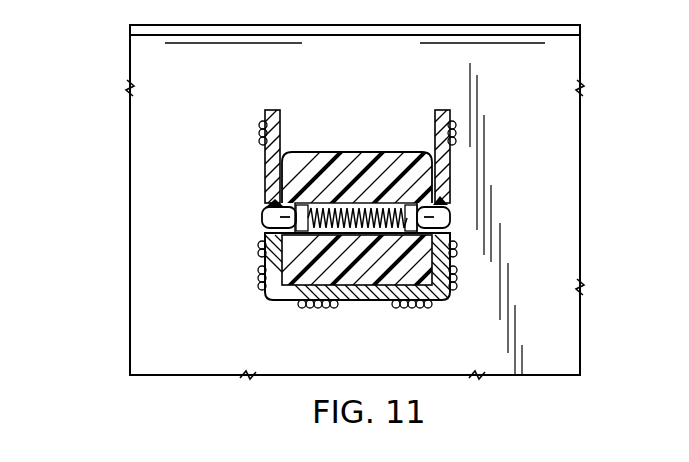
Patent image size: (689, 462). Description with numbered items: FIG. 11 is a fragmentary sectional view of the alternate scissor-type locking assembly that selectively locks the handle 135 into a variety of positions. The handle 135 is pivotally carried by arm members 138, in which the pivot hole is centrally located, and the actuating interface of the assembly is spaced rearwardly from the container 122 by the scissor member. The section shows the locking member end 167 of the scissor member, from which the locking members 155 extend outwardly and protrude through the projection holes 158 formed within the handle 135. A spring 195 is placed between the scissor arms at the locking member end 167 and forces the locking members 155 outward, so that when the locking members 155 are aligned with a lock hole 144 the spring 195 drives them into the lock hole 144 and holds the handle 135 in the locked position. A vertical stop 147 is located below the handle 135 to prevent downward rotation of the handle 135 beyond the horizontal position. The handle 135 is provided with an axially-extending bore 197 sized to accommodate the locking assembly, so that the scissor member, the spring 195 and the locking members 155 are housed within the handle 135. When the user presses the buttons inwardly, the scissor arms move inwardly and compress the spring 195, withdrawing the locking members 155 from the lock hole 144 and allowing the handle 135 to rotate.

The container 122 is at (124, 162).
The arm members 138 is at (268, 120).
The handle 135 is at (329, 143).
The end of scissor member 167 is at (307, 206).
The spring 195 is at (358, 216).
The locking members 155 is at (263, 212).
The first lock hole 144 is at (267, 230).
The vertical stop 147 is at (368, 292).
The projection holes 158 is at (267, 258).
The axially-extending bore 197 is at (344, 234).